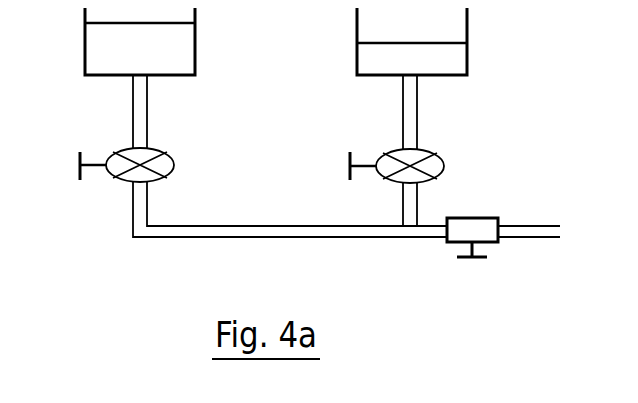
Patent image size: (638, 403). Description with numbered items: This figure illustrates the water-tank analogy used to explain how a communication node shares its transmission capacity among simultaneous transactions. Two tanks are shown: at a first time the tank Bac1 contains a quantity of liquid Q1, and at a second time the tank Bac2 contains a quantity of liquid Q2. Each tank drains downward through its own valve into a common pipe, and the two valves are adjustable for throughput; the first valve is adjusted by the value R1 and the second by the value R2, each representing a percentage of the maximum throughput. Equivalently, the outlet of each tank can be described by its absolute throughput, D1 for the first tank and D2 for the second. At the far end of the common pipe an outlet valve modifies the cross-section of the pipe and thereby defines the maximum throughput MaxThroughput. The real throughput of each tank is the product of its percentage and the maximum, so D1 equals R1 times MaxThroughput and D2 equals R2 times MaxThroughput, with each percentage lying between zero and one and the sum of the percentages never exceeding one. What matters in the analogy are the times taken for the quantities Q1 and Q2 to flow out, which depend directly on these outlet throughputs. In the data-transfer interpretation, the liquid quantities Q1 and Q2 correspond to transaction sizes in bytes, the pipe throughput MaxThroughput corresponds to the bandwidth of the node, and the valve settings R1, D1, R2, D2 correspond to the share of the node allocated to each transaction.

The tank 1 Bac1 is at (109, 41).
The quantity of liquid in tank 1 Q1 is at (140, 42).
The tank 2 Bac2 is at (443, 41).
The quantity of liquid in tank 2 Q2 is at (412, 57).
The throughput adjustment of first valve R1 is at (108, 155).
The absolute throughput of first tank D1 is at (74, 179).
The throughput adjustment of second valve R2 is at (378, 156).
The absolute throughput of second tank D2 is at (344, 180).
The maximum throughput MaxThroughput is at (475, 254).